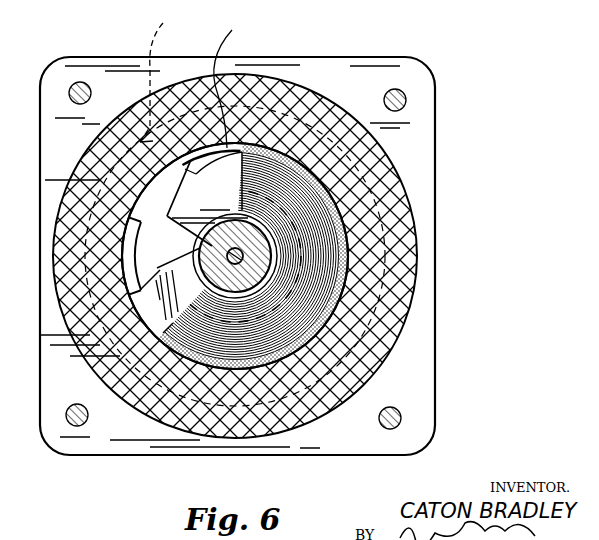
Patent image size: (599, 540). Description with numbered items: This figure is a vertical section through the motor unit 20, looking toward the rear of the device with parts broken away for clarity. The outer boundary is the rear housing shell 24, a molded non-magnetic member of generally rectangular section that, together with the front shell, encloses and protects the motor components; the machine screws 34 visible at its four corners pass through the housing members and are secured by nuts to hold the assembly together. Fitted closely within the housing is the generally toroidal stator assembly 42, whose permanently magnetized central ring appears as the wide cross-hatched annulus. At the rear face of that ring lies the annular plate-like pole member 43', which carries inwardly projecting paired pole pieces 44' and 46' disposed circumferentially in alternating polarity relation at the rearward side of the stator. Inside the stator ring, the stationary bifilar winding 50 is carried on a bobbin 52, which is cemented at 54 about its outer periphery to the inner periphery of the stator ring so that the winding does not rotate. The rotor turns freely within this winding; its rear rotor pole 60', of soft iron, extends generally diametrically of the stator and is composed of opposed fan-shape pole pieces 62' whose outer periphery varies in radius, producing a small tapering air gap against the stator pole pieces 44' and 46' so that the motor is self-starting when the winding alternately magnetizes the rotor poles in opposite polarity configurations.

The motor unit 20 is at (325, 55).
The rear housing shell 24 is at (418, 163).
The machine screws 34 is at (406, 100).
The stator assembly 42 is at (100, 264).
The pole member 43' is at (174, 77).
The pole piece 44' is at (235, 253).
The pole piece 46' is at (299, 256).
The winding 50 is at (350, 237).
The bobbin 52 is at (278, 263).
The cement 54 is at (320, 330).
The rotor pole 60' is at (210, 201).
The fan-shape pole piece 62' is at (201, 167).